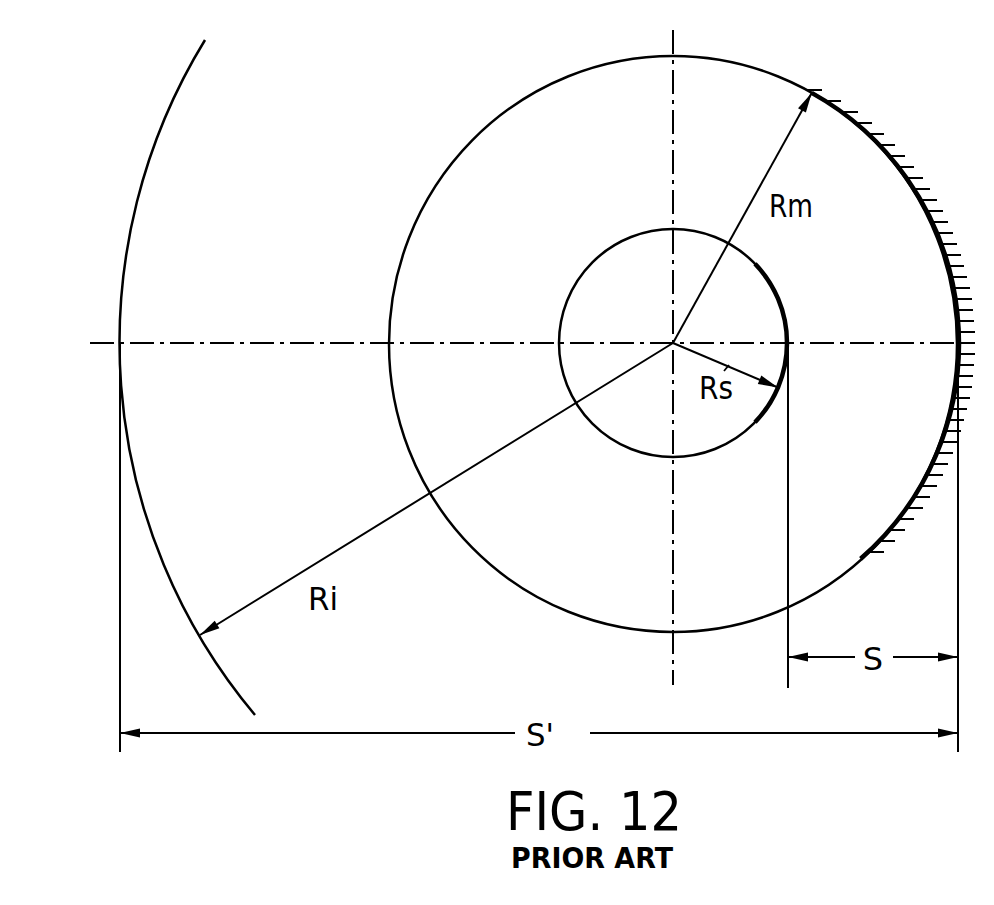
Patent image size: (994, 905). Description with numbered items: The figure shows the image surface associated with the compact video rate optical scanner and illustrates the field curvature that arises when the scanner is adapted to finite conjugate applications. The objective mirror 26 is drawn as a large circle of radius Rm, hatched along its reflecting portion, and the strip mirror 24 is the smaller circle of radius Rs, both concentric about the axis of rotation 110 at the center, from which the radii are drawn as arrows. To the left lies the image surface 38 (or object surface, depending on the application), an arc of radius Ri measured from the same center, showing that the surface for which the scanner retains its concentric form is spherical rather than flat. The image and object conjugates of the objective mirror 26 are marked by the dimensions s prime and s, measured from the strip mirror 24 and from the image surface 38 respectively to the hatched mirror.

The axis of rotation 110 is at (670, 338).
The objective mirror 26 is at (930, 222).
The strip mirror 24 is at (788, 364).
The image surface 38 is at (128, 248).